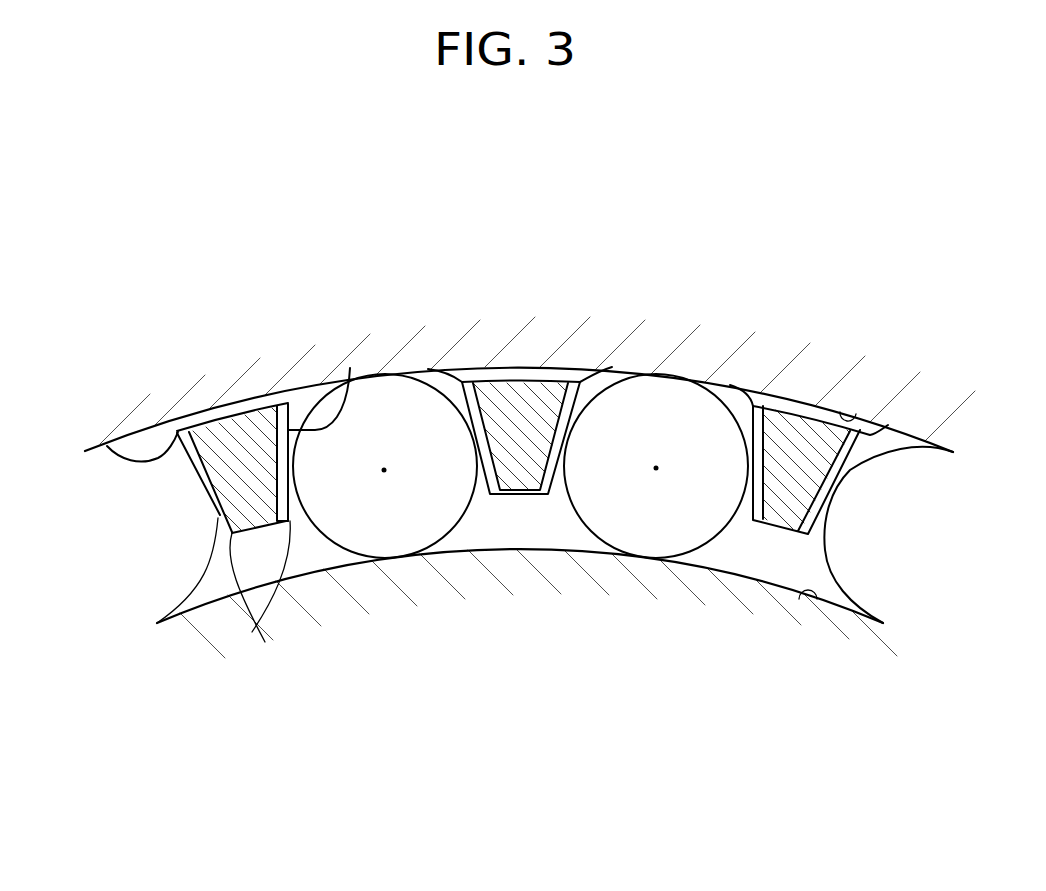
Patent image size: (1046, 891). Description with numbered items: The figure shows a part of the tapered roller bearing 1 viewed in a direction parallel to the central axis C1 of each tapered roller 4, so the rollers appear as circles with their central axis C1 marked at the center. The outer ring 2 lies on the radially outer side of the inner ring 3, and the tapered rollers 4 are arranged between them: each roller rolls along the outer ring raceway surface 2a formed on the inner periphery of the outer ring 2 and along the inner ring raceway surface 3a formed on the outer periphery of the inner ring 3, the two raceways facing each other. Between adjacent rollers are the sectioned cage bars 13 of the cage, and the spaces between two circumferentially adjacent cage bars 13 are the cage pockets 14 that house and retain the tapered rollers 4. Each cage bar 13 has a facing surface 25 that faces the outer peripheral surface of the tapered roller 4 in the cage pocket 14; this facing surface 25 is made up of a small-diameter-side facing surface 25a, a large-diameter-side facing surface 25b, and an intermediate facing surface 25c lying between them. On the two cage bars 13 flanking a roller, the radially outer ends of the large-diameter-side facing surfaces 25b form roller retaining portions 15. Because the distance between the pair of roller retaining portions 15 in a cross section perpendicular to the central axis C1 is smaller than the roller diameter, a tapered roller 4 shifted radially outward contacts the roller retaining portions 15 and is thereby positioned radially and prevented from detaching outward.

The tapered roller bearing 1 is at (140, 724).
The outer ring 2 is at (562, 353).
The outer ring raceway surface 2a is at (853, 414).
The inner ring 3 is at (497, 570).
The inner ring raceway surface 3a is at (820, 596).
The tapered roller 4 is at (355, 517).
The cage bar 13 is at (240, 440).
The cage pocket 14 is at (410, 509).
The roller retaining portion 15 is at (158, 424).
The facing surface 25 is at (222, 512).
The small-diameter-side facing surface 25a is at (252, 632).
The large-diameter-side facing surface 25b is at (107, 447).
The intermediate facing surface 25c is at (200, 487).
The central axis of tapered roller C1 is at (384, 468).